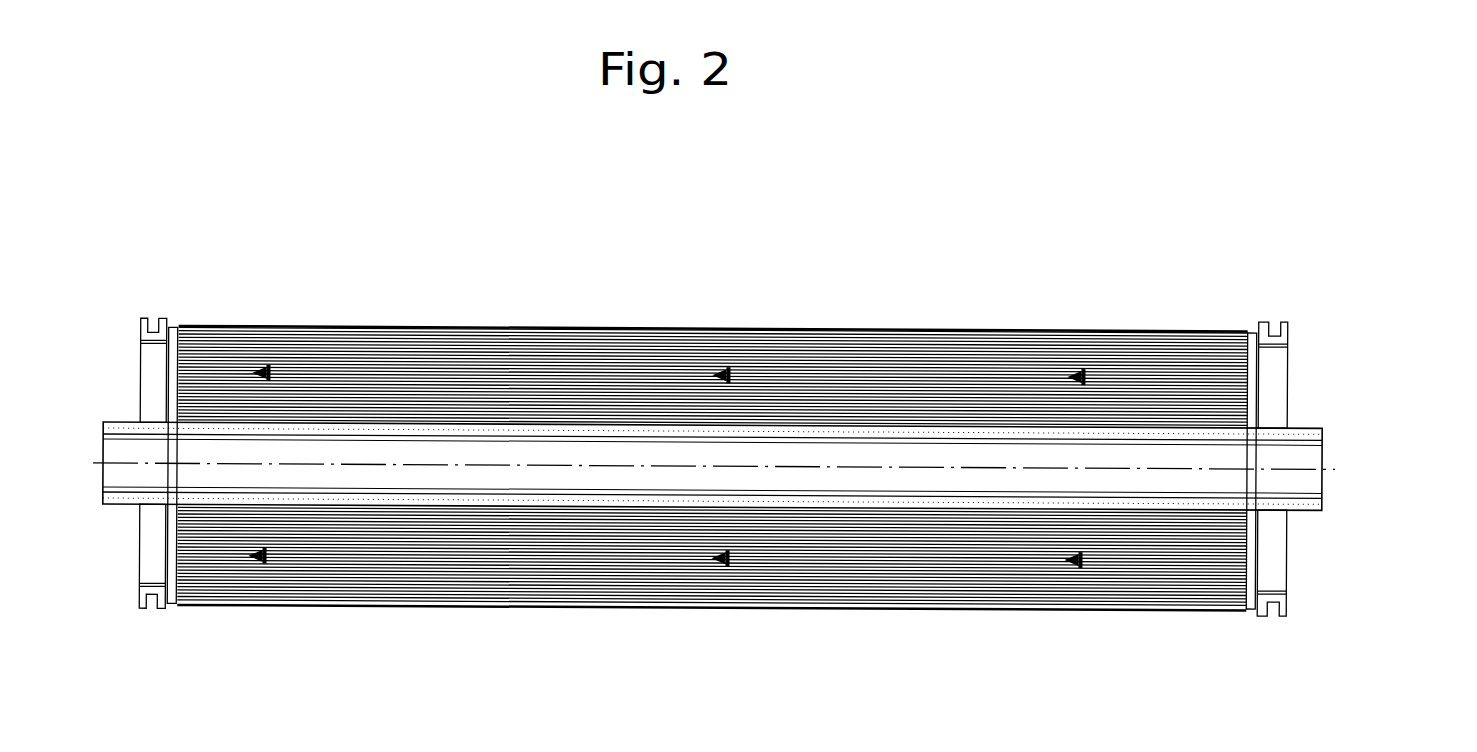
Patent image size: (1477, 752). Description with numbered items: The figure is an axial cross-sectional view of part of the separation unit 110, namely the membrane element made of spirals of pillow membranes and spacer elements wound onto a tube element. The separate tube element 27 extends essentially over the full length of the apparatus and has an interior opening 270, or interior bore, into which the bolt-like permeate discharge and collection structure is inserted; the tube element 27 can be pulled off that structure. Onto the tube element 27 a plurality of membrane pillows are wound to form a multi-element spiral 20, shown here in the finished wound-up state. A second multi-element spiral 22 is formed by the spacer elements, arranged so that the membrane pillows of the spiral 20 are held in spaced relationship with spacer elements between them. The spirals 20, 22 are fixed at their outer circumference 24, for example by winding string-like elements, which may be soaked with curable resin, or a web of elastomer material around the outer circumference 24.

The separation unit 110 is at (933, 283).
The outer circumference 24 is at (1055, 318).
The multi-element spiral 20 is at (958, 596).
The second multi-element spiral 22 is at (665, 642).
The tube element 27 is at (1300, 427).
The interior opening 270 is at (1287, 455).